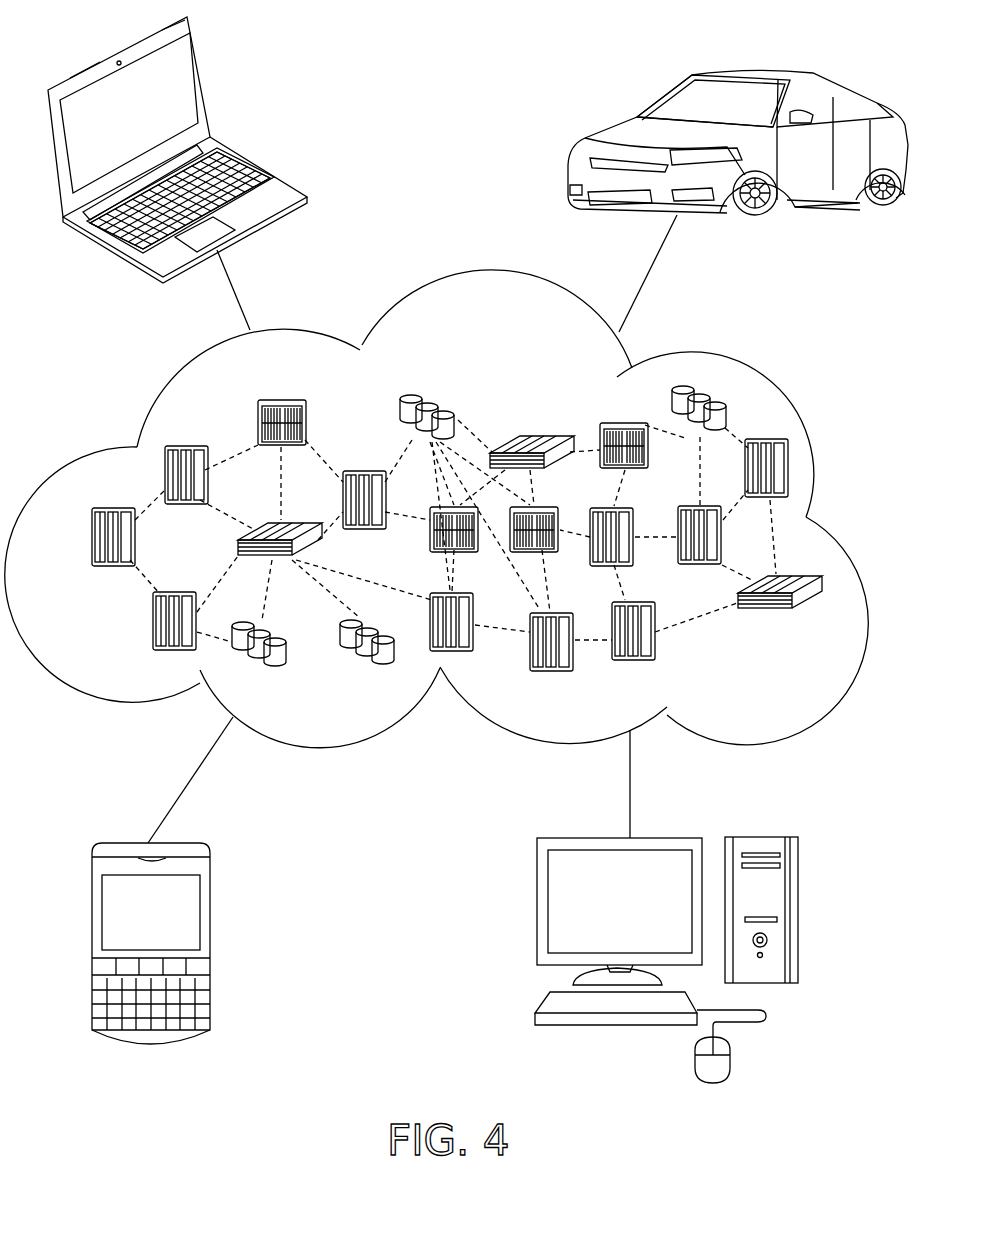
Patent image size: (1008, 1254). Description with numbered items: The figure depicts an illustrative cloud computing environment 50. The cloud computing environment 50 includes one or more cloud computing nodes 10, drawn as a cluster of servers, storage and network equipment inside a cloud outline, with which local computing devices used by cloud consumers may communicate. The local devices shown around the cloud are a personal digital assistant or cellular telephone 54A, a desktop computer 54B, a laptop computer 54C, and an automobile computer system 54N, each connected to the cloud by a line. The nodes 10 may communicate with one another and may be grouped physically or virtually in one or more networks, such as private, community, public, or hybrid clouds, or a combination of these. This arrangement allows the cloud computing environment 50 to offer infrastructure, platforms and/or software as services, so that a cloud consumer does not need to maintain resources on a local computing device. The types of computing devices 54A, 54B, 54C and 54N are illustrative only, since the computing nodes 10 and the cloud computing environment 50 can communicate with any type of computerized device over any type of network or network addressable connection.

The cloud computing nodes 10 is at (853, 700).
The cloud computing environment 50 is at (432, 278).
The personal digital assistant (PDA) or cellular telephone 54A is at (215, 897).
The desktop computer 54B is at (537, 905).
The laptop computer 54C is at (250, 157).
The automobile computer system 54N is at (617, 128).